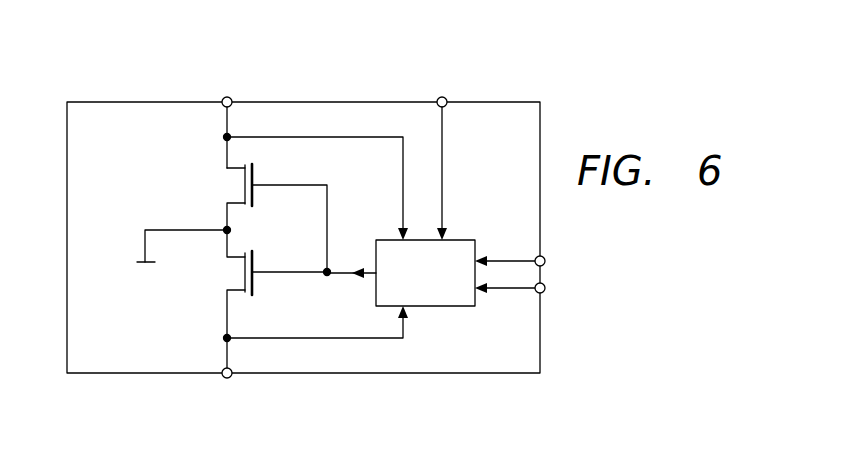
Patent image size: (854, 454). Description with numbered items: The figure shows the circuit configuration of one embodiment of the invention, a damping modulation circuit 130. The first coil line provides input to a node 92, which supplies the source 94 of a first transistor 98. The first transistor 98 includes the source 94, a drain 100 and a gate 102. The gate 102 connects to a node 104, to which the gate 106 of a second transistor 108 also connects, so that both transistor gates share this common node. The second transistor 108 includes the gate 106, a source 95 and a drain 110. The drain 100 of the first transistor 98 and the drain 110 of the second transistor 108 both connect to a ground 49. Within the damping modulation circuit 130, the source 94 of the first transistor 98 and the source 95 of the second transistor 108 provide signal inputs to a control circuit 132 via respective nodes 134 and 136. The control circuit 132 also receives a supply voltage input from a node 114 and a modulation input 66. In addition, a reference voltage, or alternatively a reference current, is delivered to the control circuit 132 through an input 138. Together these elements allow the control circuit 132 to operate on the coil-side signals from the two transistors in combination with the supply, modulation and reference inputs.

The damping modulation circuit 130 is at (521, 62).
The node 92 is at (229, 97).
The node 114 is at (441, 97).
The node 134 is at (224, 137).
The source 94 is at (226, 155).
The ND1 transistor 98 is at (226, 186).
The drain 100 is at (241, 206).
The gate 102 is at (328, 202).
The drain 110 is at (225, 240).
The ground 49 is at (137, 262).
The ND2 transistor 108 is at (225, 274).
The gate 106 is at (263, 272).
The source 95 is at (230, 318).
The node 104 is at (327, 280).
The node 136 is at (224, 338).
The control circuit 132 is at (456, 239).
The input 138 is at (500, 260).
The modulation input 66 is at (500, 291).